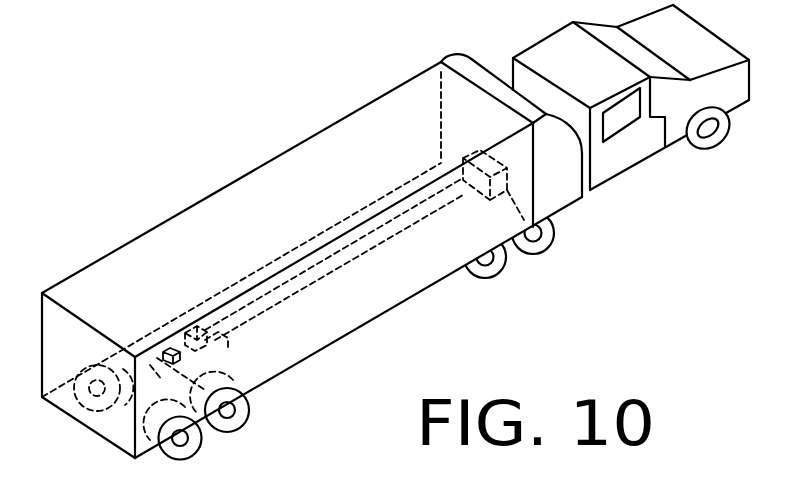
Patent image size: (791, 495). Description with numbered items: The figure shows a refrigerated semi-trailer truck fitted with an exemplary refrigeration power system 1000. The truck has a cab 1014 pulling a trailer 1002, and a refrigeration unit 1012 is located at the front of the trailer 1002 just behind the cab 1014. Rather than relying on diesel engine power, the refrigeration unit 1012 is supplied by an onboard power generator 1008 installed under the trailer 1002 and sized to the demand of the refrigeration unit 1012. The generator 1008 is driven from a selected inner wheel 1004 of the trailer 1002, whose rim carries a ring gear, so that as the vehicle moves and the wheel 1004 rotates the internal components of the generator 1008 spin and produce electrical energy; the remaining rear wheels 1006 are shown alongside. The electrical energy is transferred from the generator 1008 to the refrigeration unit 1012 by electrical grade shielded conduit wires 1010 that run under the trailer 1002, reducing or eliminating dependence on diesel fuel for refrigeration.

The vehicle system 1000 is at (183, 283).
The trailer 1002 is at (238, 192).
The vehicle wheel 1004 is at (137, 340).
The rear wheels 1006 is at (188, 388).
The generator 1008 is at (215, 330).
The electrical grade shielded conduit wires 1010 is at (351, 262).
The refrigeration unit 1012 is at (555, 197).
The cab 1014 is at (637, 166).